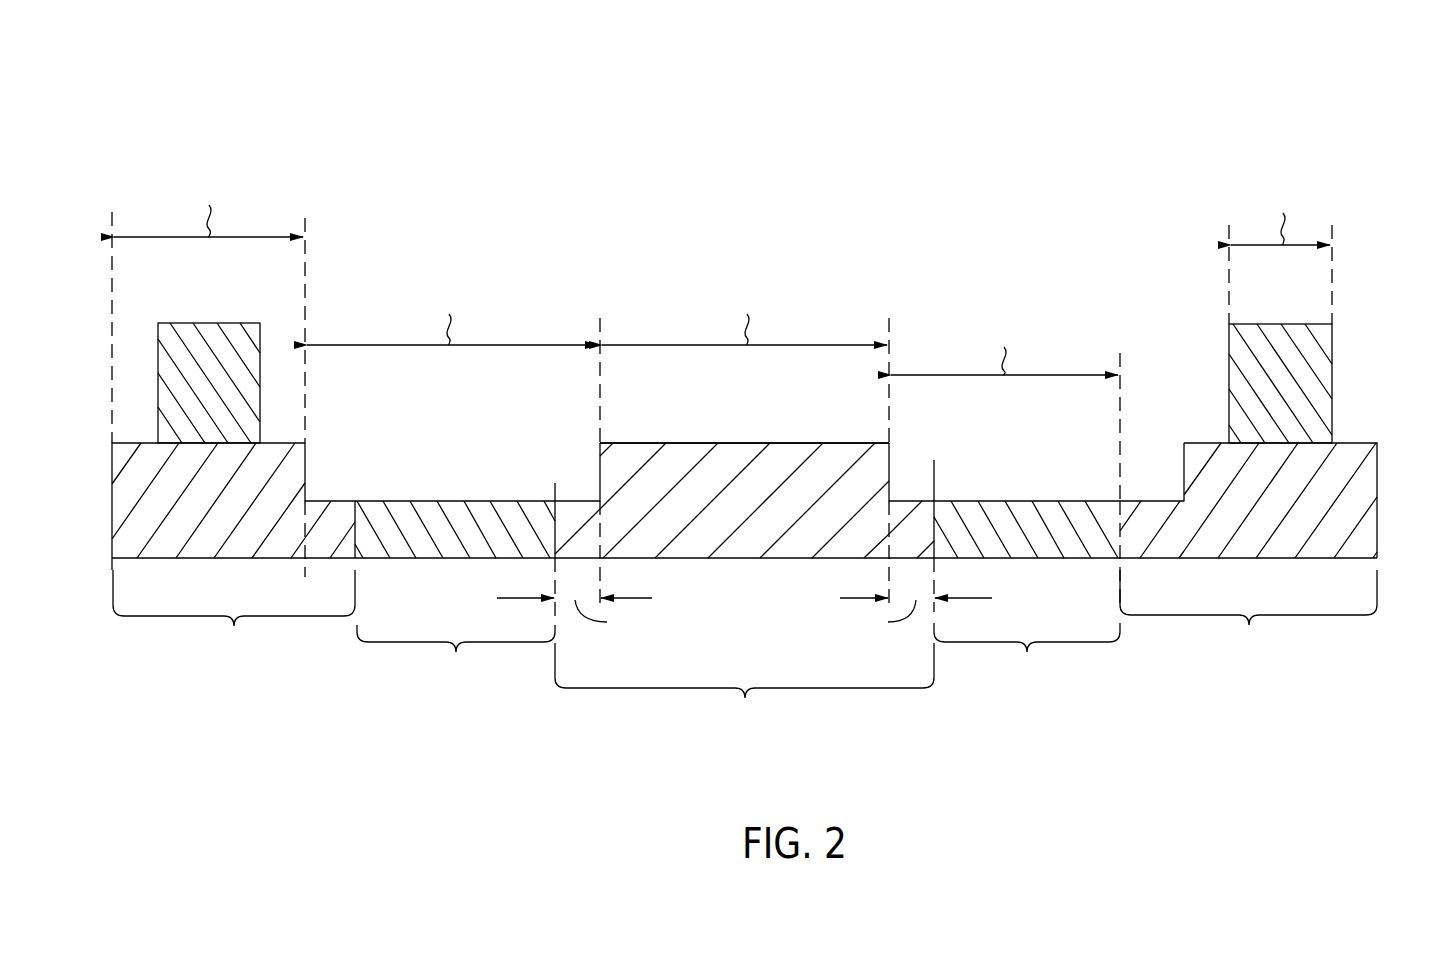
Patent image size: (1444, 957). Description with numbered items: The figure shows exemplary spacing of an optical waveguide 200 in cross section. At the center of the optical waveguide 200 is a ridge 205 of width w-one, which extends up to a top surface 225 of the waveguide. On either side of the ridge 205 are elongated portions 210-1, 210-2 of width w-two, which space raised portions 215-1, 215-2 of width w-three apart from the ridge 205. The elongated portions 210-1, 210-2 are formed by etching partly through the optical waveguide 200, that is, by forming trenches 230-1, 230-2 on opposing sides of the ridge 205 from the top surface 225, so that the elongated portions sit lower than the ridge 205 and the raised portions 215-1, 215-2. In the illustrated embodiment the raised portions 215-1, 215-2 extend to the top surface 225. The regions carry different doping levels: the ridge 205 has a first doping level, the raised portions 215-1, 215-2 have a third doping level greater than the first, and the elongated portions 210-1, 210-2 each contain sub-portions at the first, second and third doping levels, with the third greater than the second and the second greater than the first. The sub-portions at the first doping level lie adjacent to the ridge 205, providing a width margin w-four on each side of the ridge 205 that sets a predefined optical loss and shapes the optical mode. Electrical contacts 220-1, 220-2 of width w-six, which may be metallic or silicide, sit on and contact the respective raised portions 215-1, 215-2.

The optical waveguide 200 is at (1316, 107).
The ridge 205 is at (664, 464).
The elongated portion 210-1 is at (437, 517).
The elongated portion 210-2 is at (993, 513).
The raised portion 215-1 is at (272, 457).
The raised portion 215-2 is at (1353, 457).
The electrical contact 220-1 is at (249, 331).
The electrical contact 220-2 is at (1331, 341).
The top surface 225 is at (789, 442).
The trench 230-1 is at (431, 447).
The trench 230-2 is at (953, 473).